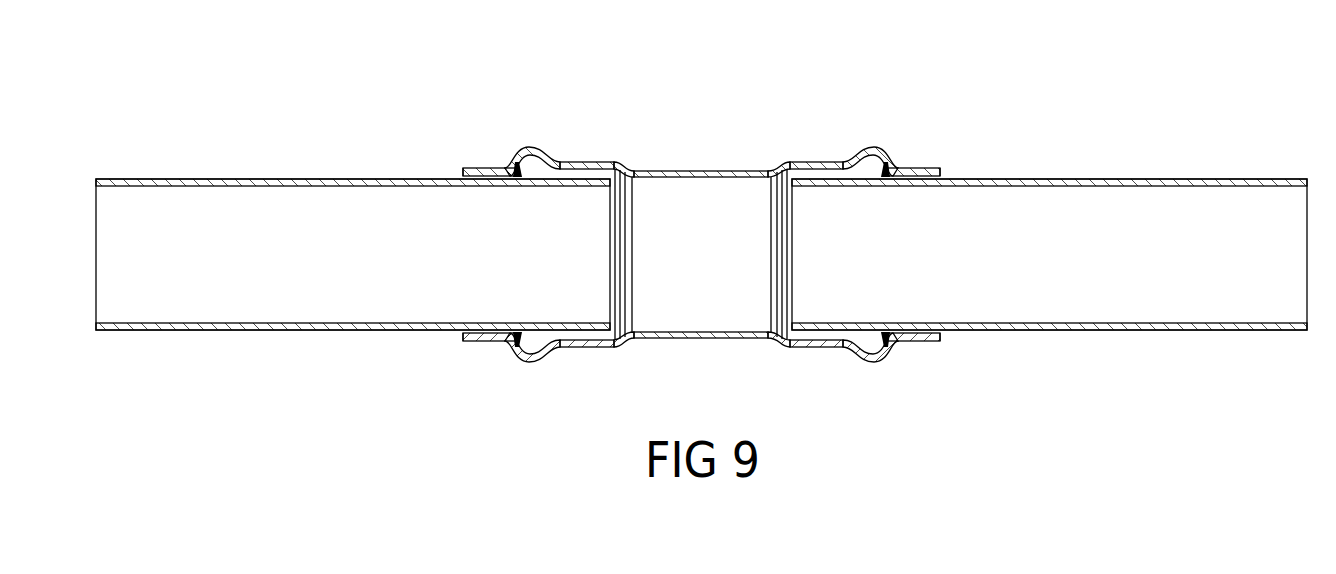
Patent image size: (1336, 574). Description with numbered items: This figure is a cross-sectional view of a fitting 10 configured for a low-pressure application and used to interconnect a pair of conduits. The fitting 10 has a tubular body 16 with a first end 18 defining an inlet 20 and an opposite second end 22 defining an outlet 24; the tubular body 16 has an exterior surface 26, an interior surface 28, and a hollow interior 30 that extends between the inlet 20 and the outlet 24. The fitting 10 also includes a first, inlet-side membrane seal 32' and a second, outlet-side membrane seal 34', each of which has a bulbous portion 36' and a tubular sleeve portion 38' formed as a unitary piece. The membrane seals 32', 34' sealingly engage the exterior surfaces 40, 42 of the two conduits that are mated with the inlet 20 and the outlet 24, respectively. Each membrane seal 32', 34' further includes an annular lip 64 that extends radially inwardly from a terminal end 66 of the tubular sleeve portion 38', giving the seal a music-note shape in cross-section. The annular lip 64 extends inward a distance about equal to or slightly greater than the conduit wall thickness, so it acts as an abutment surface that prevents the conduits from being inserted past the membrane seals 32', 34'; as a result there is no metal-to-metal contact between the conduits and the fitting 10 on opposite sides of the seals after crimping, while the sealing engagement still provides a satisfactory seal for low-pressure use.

The fitting 10 is at (780, 98).
The tubular body 16 is at (729, 171).
The first end 18 is at (466, 337).
The inlet 20 is at (483, 342).
The second end 22 is at (942, 172).
The outlet 24 is at (922, 168).
The exterior surface 26 is at (732, 338).
The interior surface 28 is at (644, 178).
The hollow interior 30 is at (714, 266).
The first membrane seal 32' is at (496, 218).
The second membrane seal 34' is at (913, 281).
The bulbous portion 36' is at (703, 254).
The tubular sleeve portion 38' is at (720, 263).
The exterior surface of first conduit 40 is at (225, 178).
The exterior surface of second conduit 42 is at (1143, 331).
The annular lip 64 is at (611, 192).
The terminal end 66 is at (798, 168).